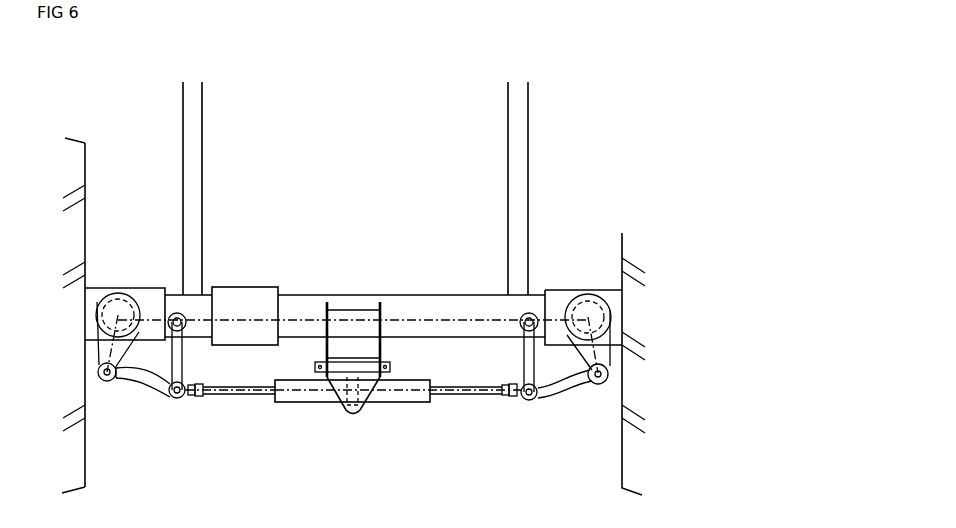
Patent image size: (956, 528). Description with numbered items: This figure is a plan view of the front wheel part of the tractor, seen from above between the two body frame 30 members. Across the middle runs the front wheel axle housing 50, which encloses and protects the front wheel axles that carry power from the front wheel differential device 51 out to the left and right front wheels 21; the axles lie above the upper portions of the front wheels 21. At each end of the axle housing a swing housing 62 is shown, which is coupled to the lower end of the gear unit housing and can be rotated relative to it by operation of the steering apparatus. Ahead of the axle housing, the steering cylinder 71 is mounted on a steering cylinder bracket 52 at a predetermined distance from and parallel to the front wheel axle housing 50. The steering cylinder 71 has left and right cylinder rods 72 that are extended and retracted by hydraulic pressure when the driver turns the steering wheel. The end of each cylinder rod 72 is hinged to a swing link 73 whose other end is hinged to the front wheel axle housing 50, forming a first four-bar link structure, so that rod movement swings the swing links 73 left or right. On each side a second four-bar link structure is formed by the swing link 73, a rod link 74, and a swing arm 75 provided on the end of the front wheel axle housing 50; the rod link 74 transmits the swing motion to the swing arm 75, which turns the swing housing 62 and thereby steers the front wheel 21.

The front wheel 21 is at (73, 140).
The body frame 30 is at (510, 163).
The front wheel axle housing 50 is at (424, 312).
The front wheel differential device 51 is at (243, 293).
The steering cylinder bracket 52 is at (322, 322).
The swing housing 62 is at (122, 305).
The steering cylinder 71 is at (413, 403).
The cylinder rod 72 is at (251, 396).
The swing link 73 is at (185, 352).
The rod link 74 is at (150, 383).
The swing arm 75 is at (94, 365).